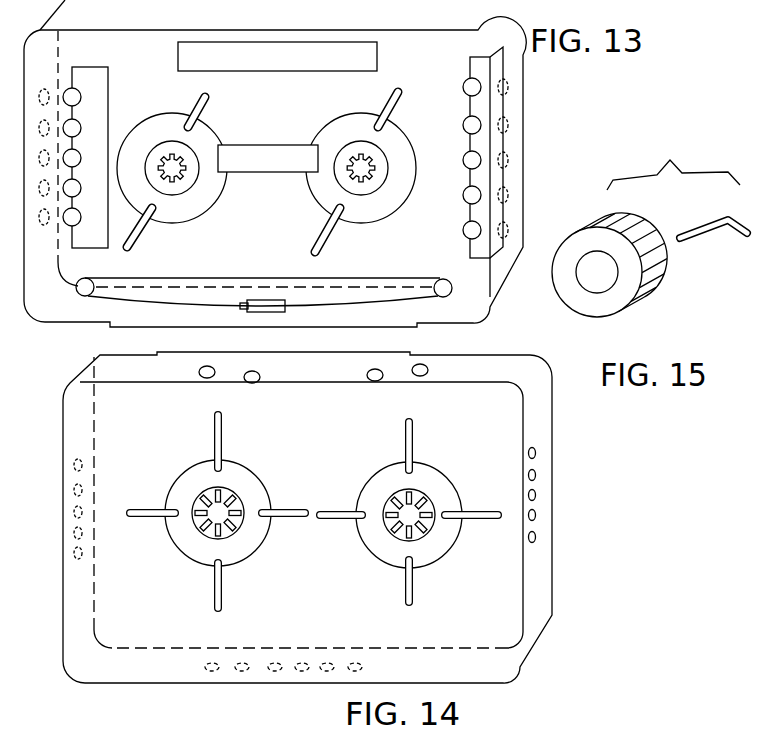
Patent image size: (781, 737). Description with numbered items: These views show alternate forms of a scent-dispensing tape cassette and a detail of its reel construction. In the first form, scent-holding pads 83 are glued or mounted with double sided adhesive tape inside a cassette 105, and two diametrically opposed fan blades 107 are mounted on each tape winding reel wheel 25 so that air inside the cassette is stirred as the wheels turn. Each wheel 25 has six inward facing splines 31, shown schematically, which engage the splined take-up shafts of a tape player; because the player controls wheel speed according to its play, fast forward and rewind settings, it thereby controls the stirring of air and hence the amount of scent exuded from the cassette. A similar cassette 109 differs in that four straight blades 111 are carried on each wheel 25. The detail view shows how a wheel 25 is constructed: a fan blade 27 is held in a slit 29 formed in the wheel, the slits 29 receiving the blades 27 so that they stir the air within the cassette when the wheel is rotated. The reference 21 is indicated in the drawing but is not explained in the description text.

In FIG. 13, the cassette housing 21 is at (523, 192).
In FIG. 13, the tape winding reel wheel 25 is at (398, 218).
In FIG. 15, the tape winding reel wheel 25 is at (598, 316).
In FIG. 14, the tape winding reel wheel 25 is at (368, 543).
In FIG. 15, the fan blade 27 is at (727, 218).
In FIG. 15, the slit 29 is at (655, 291).
In FIG. 13, the inward facing spline 31 is at (362, 170).
In FIG. 13, the scent-holding pad 83 is at (236, 52).
In FIG. 13, the cassette 105 is at (533, 316).
In FIG. 13, the fan blade 107 is at (388, 126).
In FIG. 14, the cassette 109 is at (556, 618).
In FIG. 14, the straight blade 111 is at (405, 598).